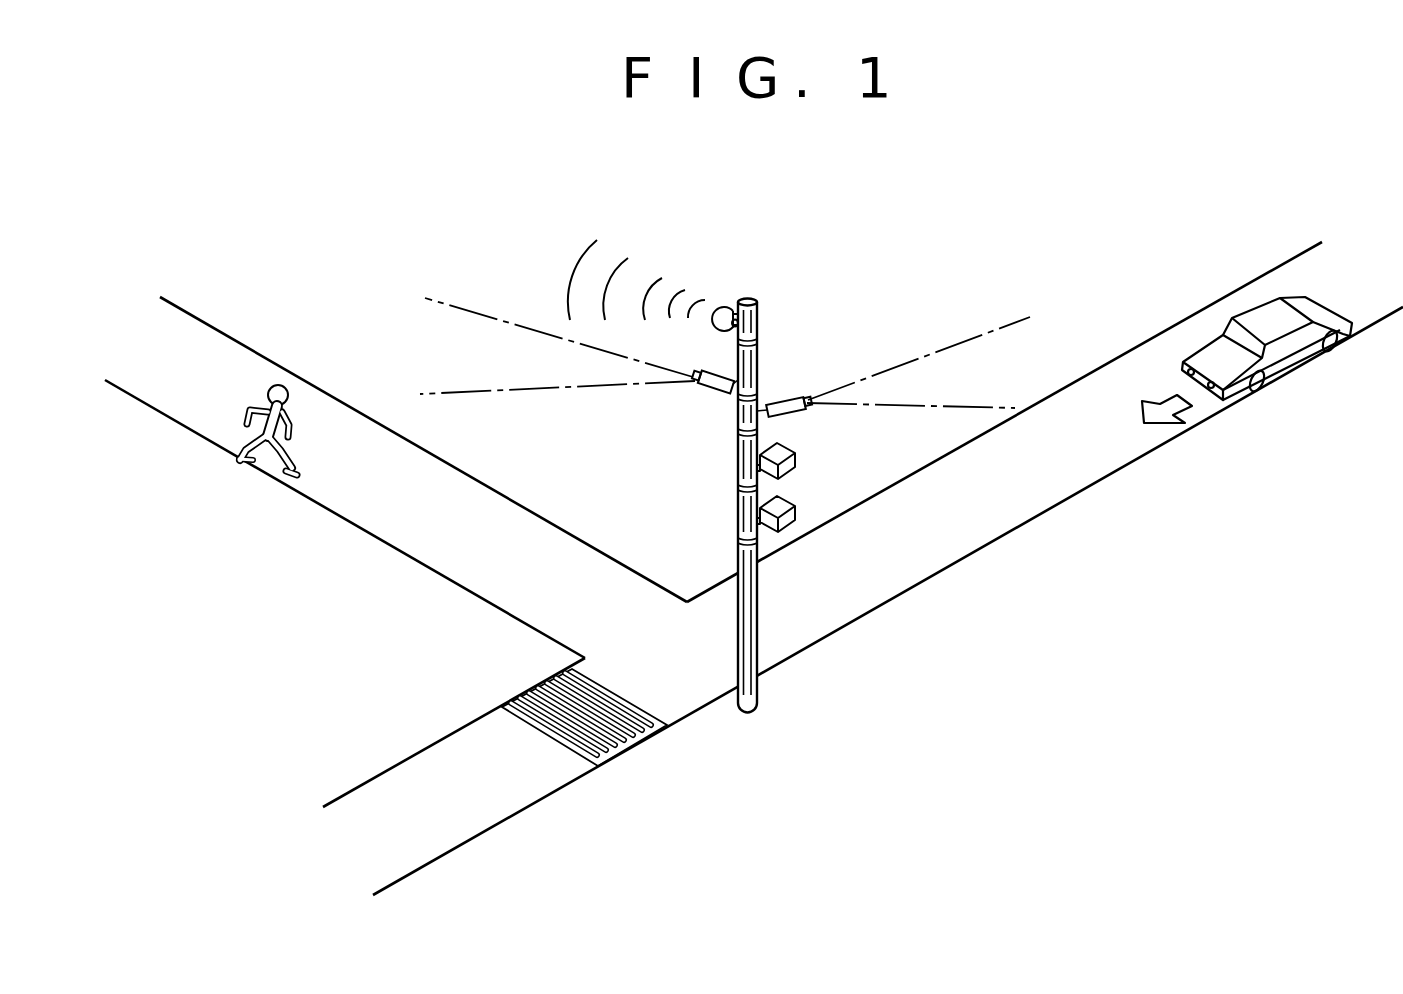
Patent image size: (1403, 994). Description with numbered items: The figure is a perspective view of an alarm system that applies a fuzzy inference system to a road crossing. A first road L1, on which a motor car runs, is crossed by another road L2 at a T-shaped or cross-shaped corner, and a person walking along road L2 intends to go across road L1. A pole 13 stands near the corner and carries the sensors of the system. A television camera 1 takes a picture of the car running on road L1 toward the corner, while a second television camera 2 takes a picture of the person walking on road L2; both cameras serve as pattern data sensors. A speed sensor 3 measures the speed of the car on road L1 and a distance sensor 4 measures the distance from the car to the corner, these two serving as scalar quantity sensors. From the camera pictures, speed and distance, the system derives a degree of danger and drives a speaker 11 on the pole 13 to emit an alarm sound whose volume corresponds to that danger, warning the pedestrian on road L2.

The television camera 1 is at (782, 398).
The television camera 2 is at (718, 390).
The speed sensor 3 is at (790, 450).
The distance sensor 4 is at (790, 503).
The speaker 11 is at (727, 305).
The pole 13 is at (758, 593).
The first road L1 is at (1197, 322).
The other road L2 is at (195, 422).